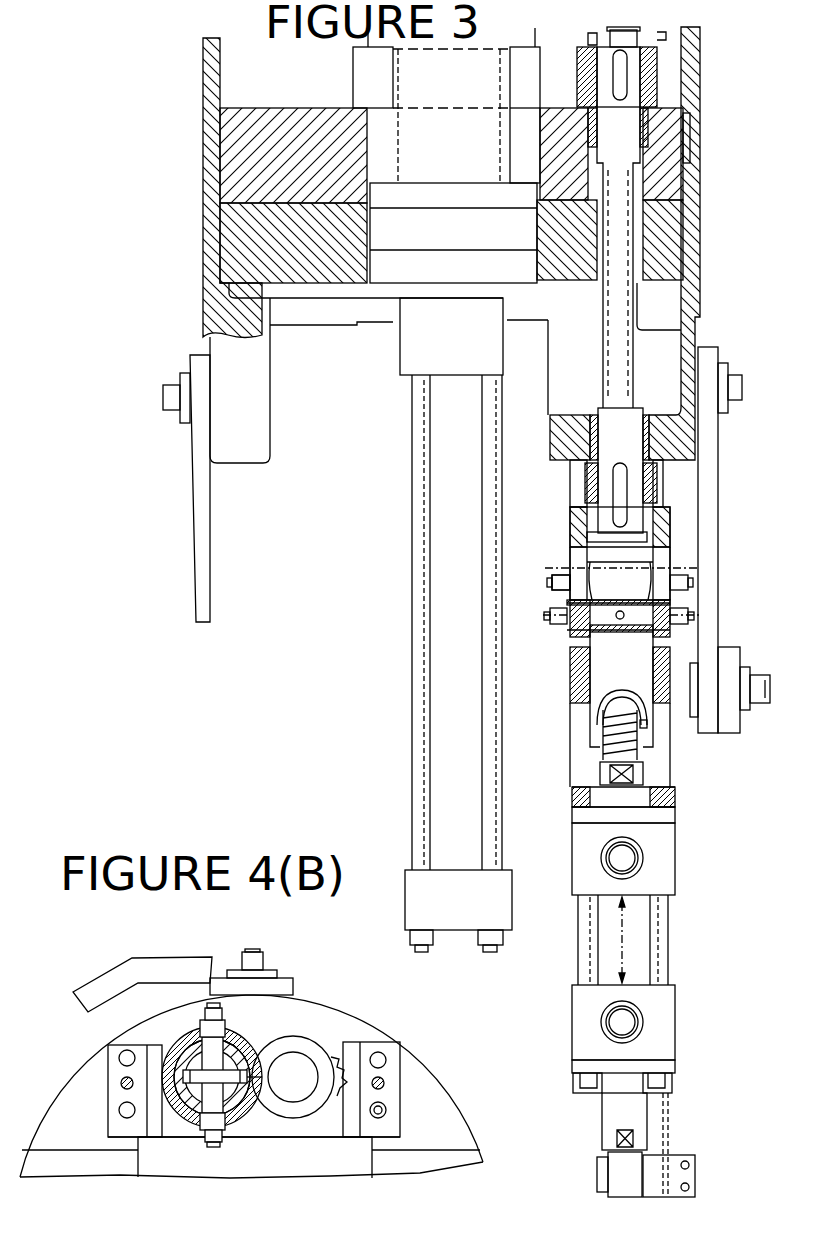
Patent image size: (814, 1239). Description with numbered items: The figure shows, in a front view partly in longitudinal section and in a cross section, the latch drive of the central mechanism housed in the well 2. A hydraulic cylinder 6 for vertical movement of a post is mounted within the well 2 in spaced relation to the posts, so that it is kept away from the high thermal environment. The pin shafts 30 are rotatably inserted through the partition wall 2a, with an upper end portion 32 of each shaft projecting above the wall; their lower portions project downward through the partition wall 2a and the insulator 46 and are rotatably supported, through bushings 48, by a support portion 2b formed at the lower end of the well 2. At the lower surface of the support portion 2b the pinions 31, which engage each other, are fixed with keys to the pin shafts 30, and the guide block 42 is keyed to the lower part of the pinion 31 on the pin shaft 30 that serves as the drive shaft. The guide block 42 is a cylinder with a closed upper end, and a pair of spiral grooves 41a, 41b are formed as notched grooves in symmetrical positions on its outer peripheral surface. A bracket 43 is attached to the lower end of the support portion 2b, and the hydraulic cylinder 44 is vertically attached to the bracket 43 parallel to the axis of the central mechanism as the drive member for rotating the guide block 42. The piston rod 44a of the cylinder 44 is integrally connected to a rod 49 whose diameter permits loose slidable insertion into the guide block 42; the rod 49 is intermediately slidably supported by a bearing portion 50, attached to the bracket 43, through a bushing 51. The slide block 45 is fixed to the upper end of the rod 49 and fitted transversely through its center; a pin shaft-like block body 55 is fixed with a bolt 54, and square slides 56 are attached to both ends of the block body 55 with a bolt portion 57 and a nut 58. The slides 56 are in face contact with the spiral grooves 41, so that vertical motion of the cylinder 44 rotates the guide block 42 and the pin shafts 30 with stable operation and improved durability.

In FIG. 3, the well 2 is at (203, 97).
In FIG. 3, the partition wall 2a is at (217, 185).
In FIG. 3, the support portion 2b is at (688, 330).
In FIG. 4B, the support portion 2b is at (410, 1047).
In FIG. 3, the hydraulic cylinder 6 is at (453, 660).
In FIG. 3, the pin shaft 30 is at (627, 240).
In FIG. 4B, the pin shaft 30 is at (297, 1073).
In FIG. 3, the pinion 31 is at (587, 490).
In FIG. 4B, the pinion 31 is at (128, 1075).
In FIG. 3, the rod head 32 is at (567, 77).
In FIG. 3, the spiral groove 41 is at (672, 548).
In FIG. 4B, the spiral groove 41 is at (183, 1030).
In FIG. 3, the spiral groove 41a is at (575, 557).
In FIG. 3, the spiral groove 41b is at (662, 560).
In FIG. 4B, the guide block 42 is at (175, 1040).
In FIG. 3, the bracket 43 is at (570, 765).
In FIG. 3, the hydraulic cylinder 44 is at (635, 948).
In FIG. 3, the piston rod 44a is at (645, 775).
In FIG. 3, the slide block 45 is at (688, 602).
In FIG. 4B, the slide block 45 is at (195, 1012).
In FIG. 3, the insulator 46 is at (258, 250).
In FIG. 3, the bushing 48 is at (577, 440).
In FIG. 3, the rod 49 is at (580, 685).
In FIG. 4B, the rod 49 is at (278, 1047).
In FIG. 3, the bearing portion 50 is at (571, 650).
In FIG. 3, the bushing 51 is at (597, 685).
In FIG. 3, the bolt 54 is at (632, 740).
In FIG. 4B, the bolt 54 is at (265, 1092).
In FIG. 3, the block body 55 is at (648, 700).
In FIG. 4B, the block body 55 is at (192, 1108).
In FIG. 3, the slide 56 is at (690, 593).
In FIG. 4B, the slide 56 is at (222, 1025).
In FIG. 3, the bolt portion 57 is at (552, 583).
In FIG. 4B, the bolt portion 57 is at (210, 1008).
In FIG. 3, the nut 58 is at (560, 595).
In FIG. 4B, the nut 58 is at (217, 1020).